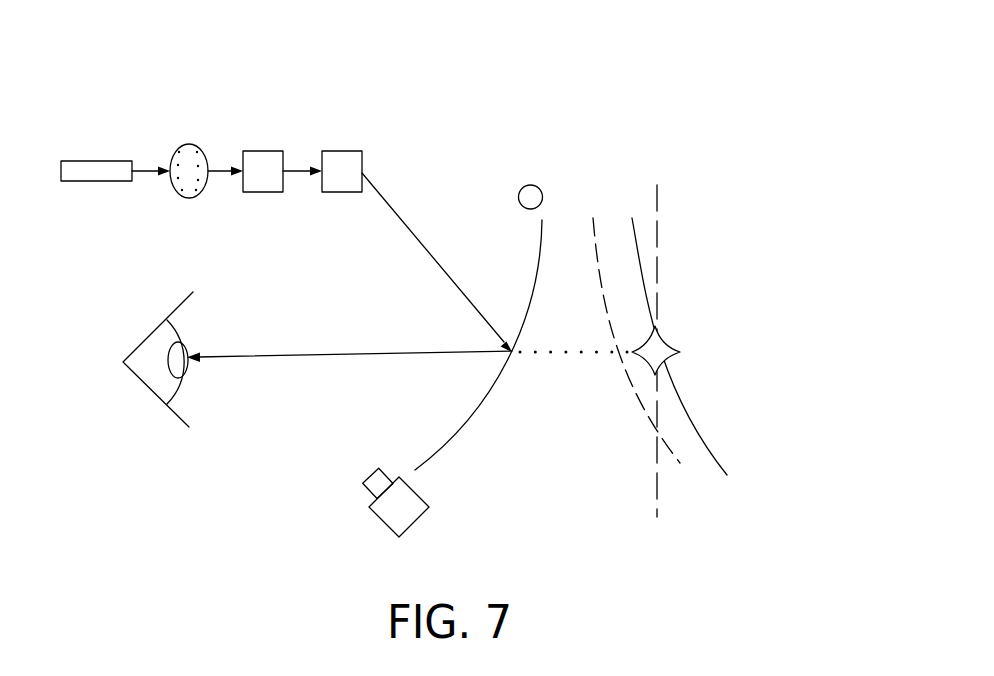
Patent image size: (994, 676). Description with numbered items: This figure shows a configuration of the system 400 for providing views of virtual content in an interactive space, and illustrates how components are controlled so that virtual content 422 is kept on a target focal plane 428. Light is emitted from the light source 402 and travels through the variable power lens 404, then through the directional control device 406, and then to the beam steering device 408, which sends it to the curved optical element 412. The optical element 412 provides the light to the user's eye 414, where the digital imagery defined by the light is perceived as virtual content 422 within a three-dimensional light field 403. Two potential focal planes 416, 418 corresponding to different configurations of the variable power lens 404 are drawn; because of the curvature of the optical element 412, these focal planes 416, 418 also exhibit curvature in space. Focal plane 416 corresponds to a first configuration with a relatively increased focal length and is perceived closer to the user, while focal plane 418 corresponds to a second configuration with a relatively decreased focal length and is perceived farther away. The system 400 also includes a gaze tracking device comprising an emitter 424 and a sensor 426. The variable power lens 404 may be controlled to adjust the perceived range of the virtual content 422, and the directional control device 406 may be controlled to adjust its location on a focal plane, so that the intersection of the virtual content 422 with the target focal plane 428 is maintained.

The system 400 is at (446, 89).
The light source 402 is at (100, 161).
The three-dimensional light field 403 is at (722, 222).
The variable power lens 404 is at (187, 144).
The directional control device 406 is at (250, 152).
The beam steering device 408 is at (330, 152).
The optical element 412 is at (447, 447).
The user's eye 414 is at (178, 343).
The focal plane 416 is at (680, 465).
The focal plane 418 is at (725, 462).
The virtual content 422 is at (664, 340).
The emitter 424 is at (520, 187).
The sensor 426 is at (369, 508).
The target focal plane 428 is at (656, 185).